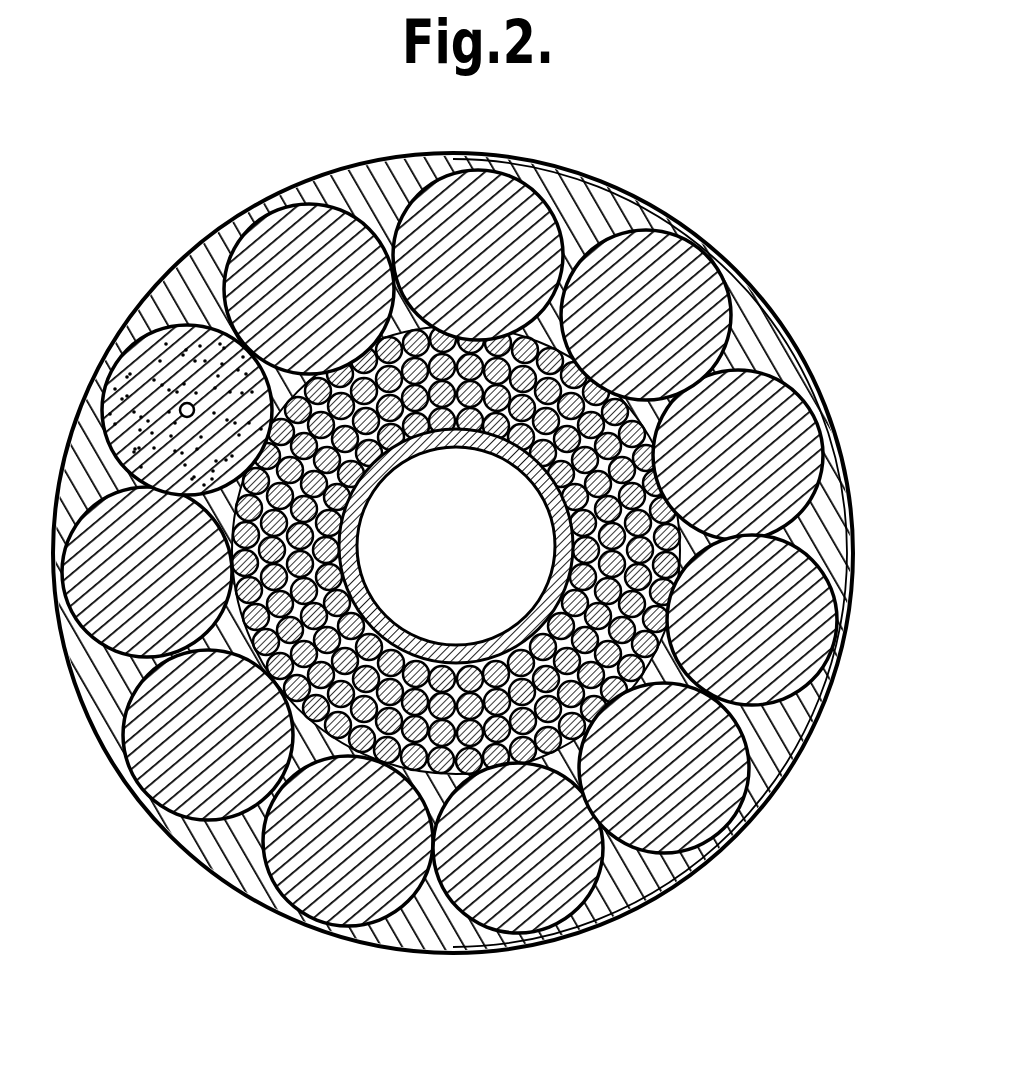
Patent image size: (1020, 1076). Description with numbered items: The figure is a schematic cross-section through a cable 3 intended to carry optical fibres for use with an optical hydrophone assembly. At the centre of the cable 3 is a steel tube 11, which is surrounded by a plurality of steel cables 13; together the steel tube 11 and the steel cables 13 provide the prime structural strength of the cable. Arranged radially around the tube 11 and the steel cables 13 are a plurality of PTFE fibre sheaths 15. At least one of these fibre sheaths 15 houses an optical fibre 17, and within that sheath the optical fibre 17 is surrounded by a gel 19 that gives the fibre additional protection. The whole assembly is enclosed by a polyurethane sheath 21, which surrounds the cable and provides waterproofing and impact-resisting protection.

The cable 3 is at (200, 168).
The steel tube 11 is at (545, 519).
The steel cables 13 is at (672, 256).
The PTFE fibre sheaths 15 is at (806, 628).
The optical fibre 17 is at (178, 406).
The gel 19 is at (152, 352).
The polyurethane sheath 21 is at (583, 178).